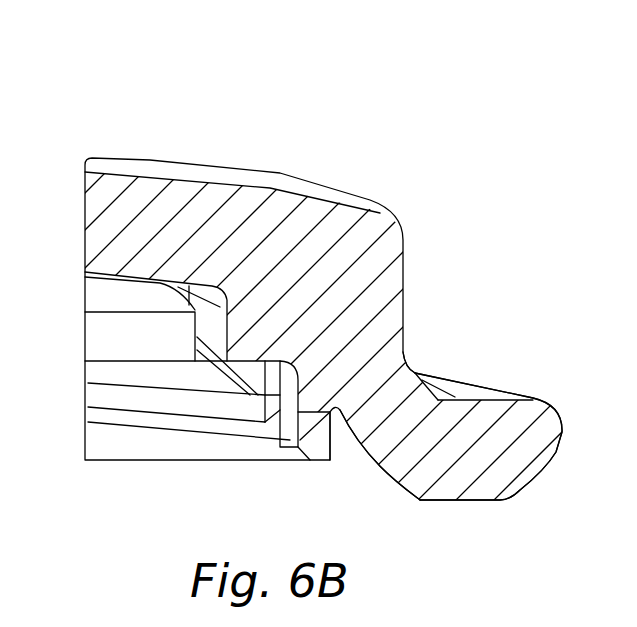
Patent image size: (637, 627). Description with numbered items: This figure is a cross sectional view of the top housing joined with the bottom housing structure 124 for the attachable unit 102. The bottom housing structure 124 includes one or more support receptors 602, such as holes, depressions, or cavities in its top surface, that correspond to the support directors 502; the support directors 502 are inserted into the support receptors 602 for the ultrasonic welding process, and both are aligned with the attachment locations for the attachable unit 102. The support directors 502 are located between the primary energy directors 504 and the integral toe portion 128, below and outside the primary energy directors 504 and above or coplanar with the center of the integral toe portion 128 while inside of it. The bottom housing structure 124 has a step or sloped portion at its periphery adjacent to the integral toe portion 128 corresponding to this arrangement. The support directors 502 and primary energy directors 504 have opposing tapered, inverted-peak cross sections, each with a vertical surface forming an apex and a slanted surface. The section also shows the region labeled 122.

The attachable unit 102 is at (286, 111).
The tread portion 122 is at (127, 210).
The bottom housing structure 124 is at (130, 445).
The integral toe portion 128 is at (512, 420).
The support director 502 is at (253, 373).
The primary energy director 504 is at (317, 413).
The support receptor 602 is at (297, 437).